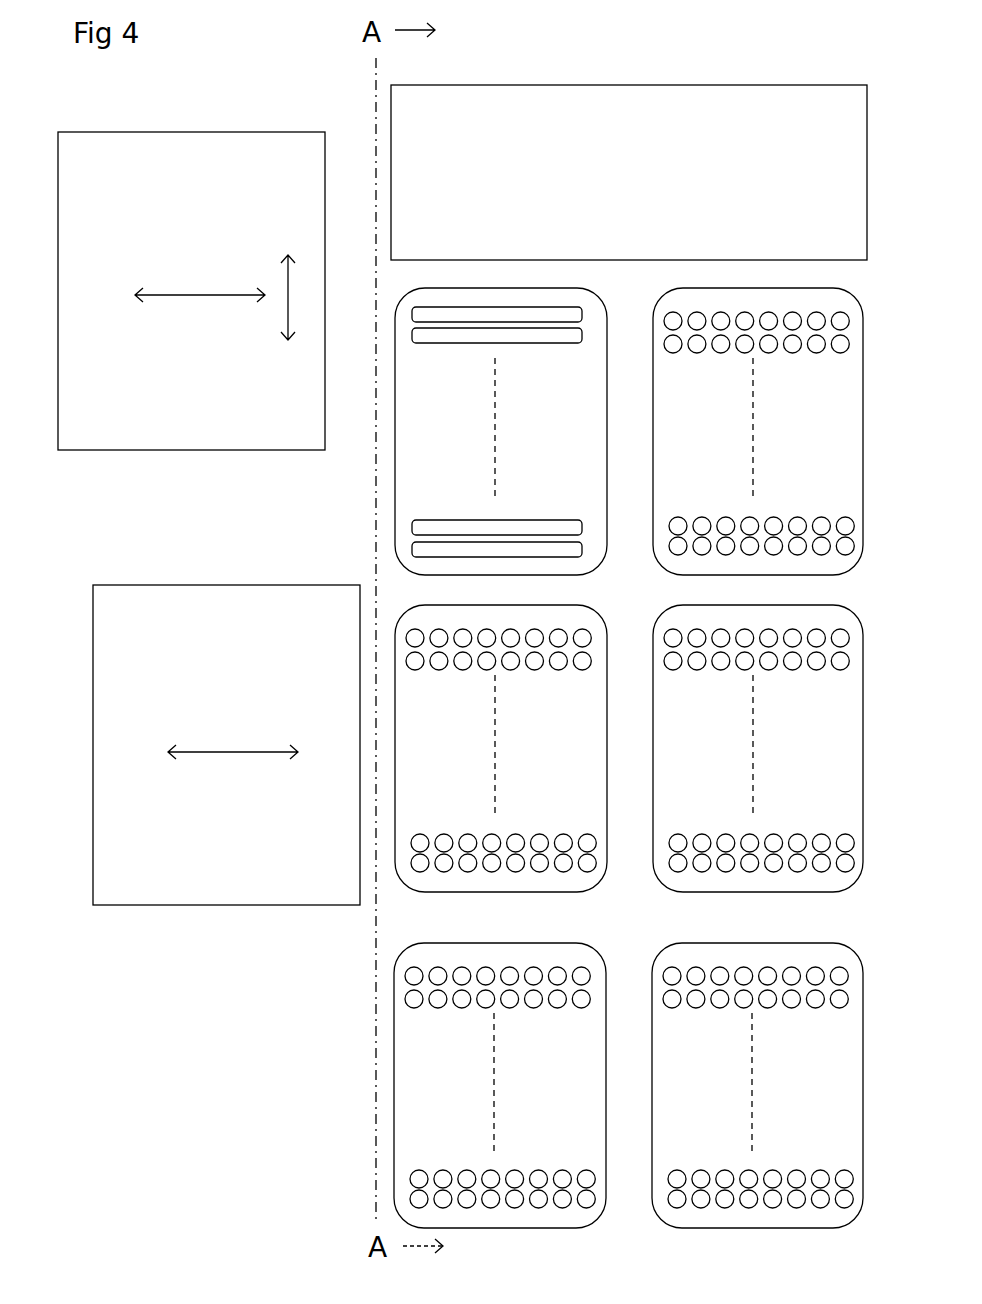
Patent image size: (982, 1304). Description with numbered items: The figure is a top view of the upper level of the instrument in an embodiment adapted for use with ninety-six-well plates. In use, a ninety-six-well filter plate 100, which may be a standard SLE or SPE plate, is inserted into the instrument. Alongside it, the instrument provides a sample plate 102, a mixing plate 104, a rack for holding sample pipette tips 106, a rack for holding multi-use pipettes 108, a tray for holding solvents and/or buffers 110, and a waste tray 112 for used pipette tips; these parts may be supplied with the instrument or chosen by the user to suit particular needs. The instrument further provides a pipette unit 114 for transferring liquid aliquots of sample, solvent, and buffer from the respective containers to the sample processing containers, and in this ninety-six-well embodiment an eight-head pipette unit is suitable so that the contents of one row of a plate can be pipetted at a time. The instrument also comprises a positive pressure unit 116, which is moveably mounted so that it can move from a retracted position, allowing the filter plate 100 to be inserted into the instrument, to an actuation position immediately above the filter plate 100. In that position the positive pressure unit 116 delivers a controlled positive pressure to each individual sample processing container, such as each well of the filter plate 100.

The filter plate 100 is at (501, 748).
The sample plate 102 is at (757, 1085).
The mixing plate 104 is at (500, 1085).
The rack for holding sample pipette tips 106 is at (758, 748).
The rack for holding multi-use pipettes 108 is at (758, 431).
The tray for holding solvents and/or buffers 110 is at (501, 431).
The waste tray 112 is at (629, 172).
The pipette unit 114 is at (191, 291).
The positive pressure unit 116 is at (226, 745).